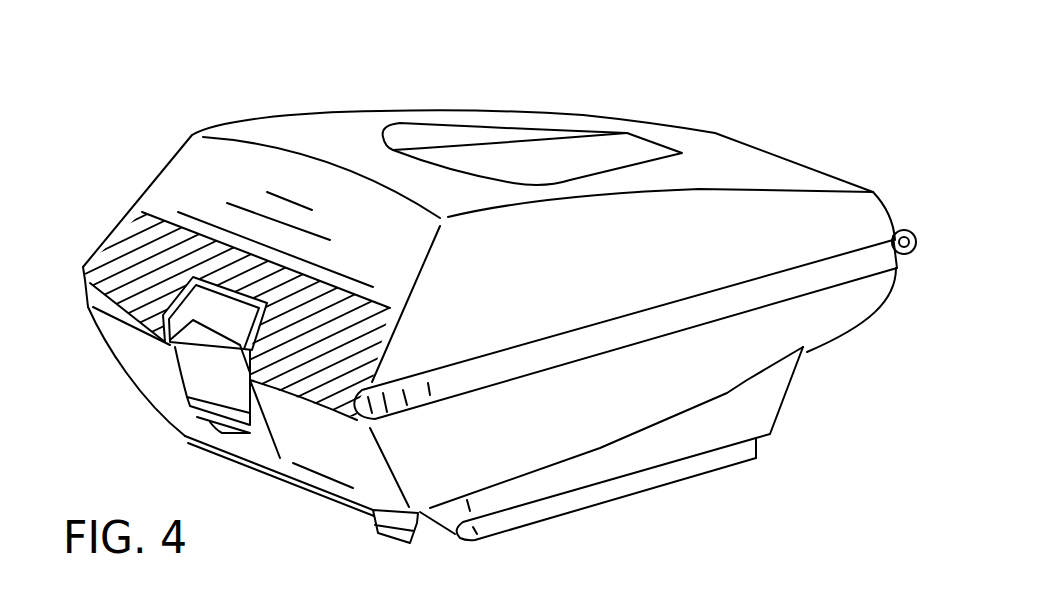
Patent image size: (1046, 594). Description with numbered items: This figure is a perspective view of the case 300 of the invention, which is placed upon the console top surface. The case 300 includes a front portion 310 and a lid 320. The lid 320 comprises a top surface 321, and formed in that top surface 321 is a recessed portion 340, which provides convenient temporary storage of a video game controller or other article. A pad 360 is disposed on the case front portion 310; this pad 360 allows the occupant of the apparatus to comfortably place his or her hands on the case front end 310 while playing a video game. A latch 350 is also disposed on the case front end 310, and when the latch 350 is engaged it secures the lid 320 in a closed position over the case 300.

The case 300 is at (782, 119).
The front portion 310 is at (122, 393).
The lid 320 is at (153, 126).
The top surface 321 is at (334, 77).
The recessed portion 340 is at (529, 151).
The latch 350 is at (211, 389).
The pad 360 is at (138, 247).